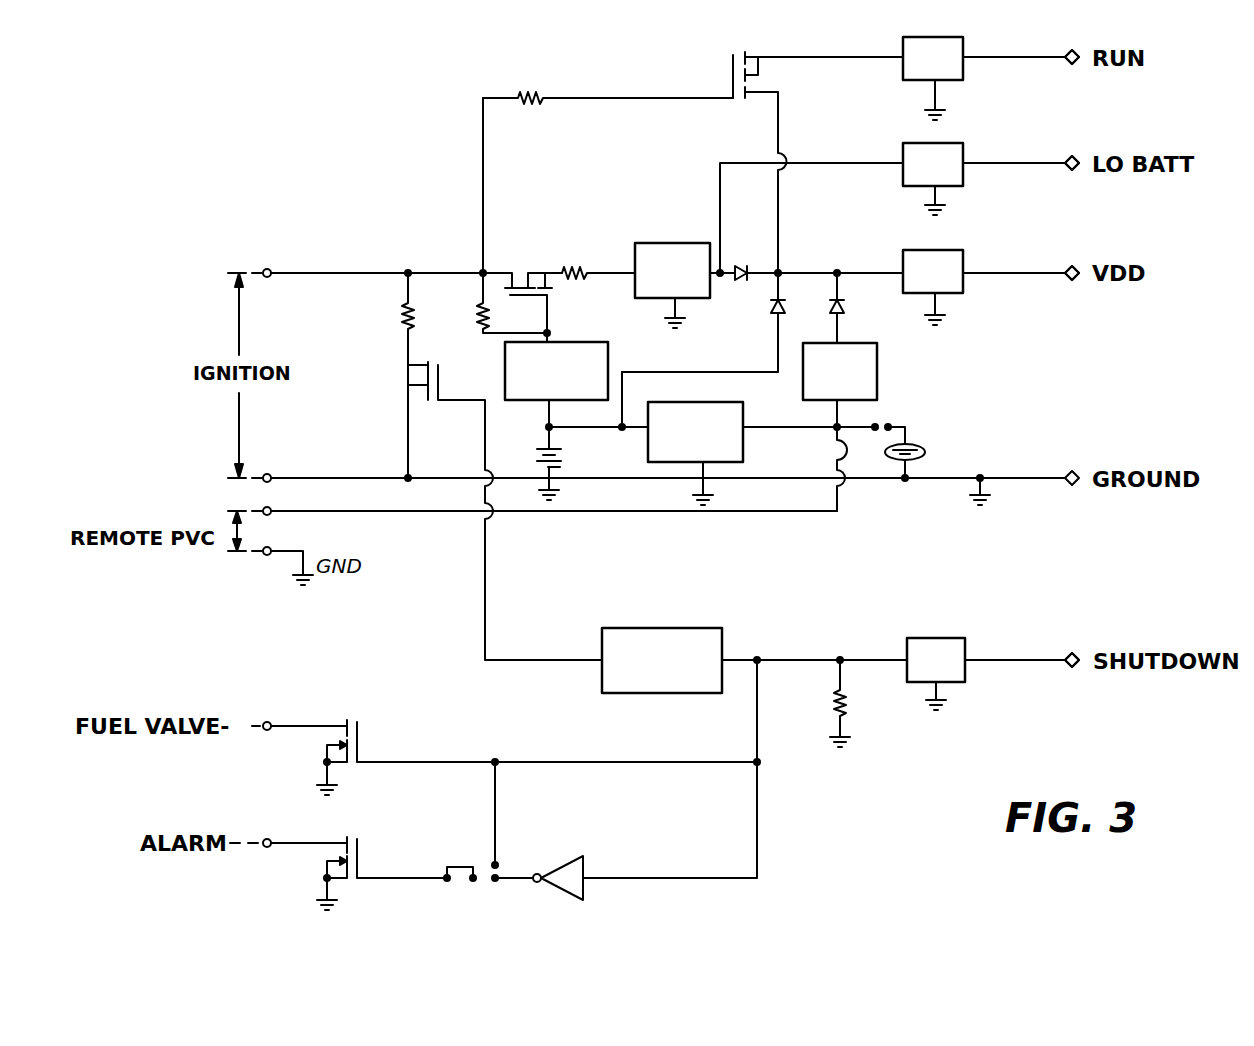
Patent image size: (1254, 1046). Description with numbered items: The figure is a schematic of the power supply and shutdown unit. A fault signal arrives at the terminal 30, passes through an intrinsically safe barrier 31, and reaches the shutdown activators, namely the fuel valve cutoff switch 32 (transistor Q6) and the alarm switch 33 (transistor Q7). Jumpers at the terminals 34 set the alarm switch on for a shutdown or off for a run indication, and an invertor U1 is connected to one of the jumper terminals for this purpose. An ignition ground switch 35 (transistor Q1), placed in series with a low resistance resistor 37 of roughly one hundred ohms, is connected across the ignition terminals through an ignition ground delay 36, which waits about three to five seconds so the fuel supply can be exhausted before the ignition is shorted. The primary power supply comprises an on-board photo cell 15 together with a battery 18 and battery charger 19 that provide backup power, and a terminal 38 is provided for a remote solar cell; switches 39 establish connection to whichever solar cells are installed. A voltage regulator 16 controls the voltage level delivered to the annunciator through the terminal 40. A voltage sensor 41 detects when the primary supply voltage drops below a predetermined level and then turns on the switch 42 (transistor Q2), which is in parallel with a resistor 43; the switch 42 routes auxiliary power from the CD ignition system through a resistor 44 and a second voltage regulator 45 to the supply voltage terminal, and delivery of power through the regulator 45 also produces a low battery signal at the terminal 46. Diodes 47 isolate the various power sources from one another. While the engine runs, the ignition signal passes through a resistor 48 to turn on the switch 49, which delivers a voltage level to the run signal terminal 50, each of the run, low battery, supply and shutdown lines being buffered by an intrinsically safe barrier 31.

The photo cell 15 is at (925, 455).
The voltage regulator 16 is at (880, 368).
The battery 18 is at (556, 450).
The battery charger 19 is at (745, 406).
The terminal 30 is at (1072, 653).
The intrinsically safe barrier 31 is at (964, 81).
The fuel valve cutoff switch 32 is at (514, 762).
The alarm switch 33 is at (359, 862).
The jumper terminals 34 is at (470, 860).
The ignition ground switch 35 is at (485, 508).
The ignition ground delay 36 is at (664, 628).
The resistor 37 is at (404, 312).
The terminal 38 is at (230, 518).
The switches 39 is at (880, 422).
The terminal 40 is at (1072, 281).
The voltage sensor 41 is at (612, 362).
The switch 42 is at (522, 281).
The resistor 43 is at (480, 316).
The resistor 44 is at (583, 268).
The second voltage regulator 45 is at (686, 242).
The terminal 46 is at (1073, 171).
The diodes 47 is at (740, 268).
The resistor 48 is at (545, 102).
The switch 49 is at (735, 100).
The run signal terminal 50 is at (1072, 65).
The transistor Q1 is at (407, 372).
The transistor Q2 is at (512, 250).
The transistor Q6 is at (370, 742).
The transistor Q7 is at (394, 826).
The invertor U1 is at (576, 862).